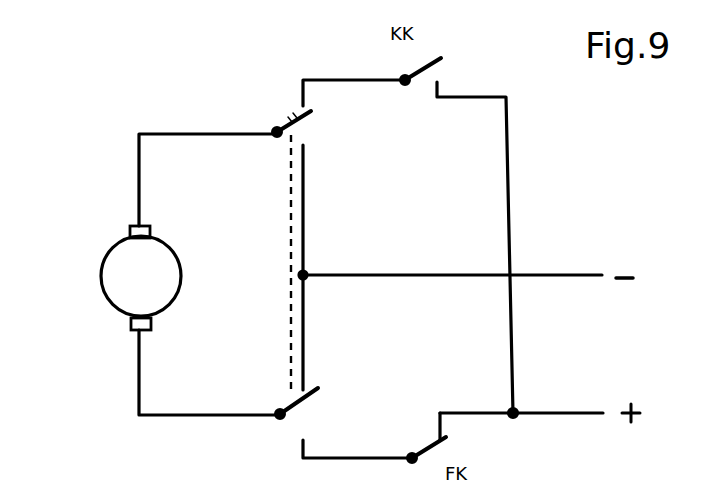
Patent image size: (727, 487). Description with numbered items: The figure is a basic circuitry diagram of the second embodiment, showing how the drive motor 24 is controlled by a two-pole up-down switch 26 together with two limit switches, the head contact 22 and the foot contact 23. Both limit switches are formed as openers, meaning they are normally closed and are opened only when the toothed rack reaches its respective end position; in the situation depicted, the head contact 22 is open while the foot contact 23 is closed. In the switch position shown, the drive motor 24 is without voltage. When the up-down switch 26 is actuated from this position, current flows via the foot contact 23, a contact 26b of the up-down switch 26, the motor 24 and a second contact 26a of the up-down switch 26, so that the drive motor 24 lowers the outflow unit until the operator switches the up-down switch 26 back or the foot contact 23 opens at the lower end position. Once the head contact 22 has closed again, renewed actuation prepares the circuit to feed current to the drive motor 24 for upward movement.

The drive motor 24 is at (101, 283).
The second contact of up-down switch 26a is at (272, 113).
The up-down switch 26 is at (289, 263).
The contact of up-down switch 26b is at (285, 418).
The head contact 22 is at (444, 66).
The foot contact 23 is at (446, 443).